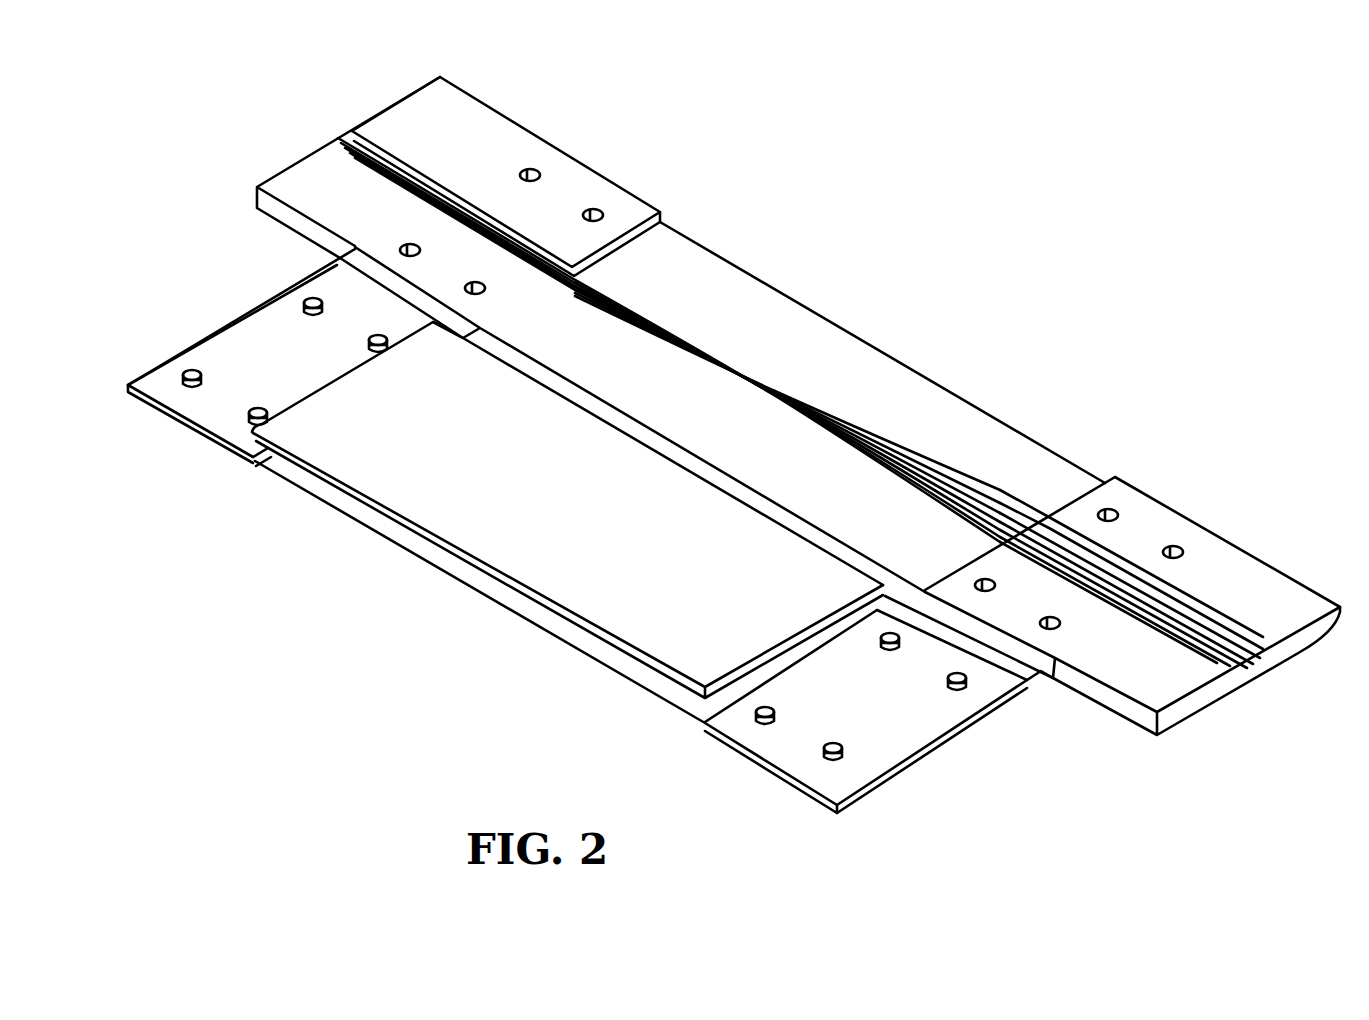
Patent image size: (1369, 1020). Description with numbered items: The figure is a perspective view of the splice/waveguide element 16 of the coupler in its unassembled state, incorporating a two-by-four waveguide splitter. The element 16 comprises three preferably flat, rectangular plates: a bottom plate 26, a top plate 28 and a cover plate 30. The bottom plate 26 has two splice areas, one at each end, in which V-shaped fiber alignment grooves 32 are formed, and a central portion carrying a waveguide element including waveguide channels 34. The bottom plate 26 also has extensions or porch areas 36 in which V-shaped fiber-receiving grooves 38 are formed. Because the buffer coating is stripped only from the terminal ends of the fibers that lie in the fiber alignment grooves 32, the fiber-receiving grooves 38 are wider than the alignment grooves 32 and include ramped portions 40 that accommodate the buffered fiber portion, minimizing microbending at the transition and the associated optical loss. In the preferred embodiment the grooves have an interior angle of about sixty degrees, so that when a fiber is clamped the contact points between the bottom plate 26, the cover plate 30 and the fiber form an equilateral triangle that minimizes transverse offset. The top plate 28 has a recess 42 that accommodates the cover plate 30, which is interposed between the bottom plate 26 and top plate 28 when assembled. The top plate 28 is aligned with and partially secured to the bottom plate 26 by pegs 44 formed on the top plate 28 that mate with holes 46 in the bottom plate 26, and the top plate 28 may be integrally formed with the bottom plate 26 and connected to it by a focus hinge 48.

The splice/waveguide element 16 is at (1003, 190).
The bottom plate 26 is at (488, 112).
The top plate 28 is at (241, 322).
The cover plate 30 is at (590, 530).
The fiber alignment grooves 32 is at (540, 240).
The waveguide channels 34 is at (598, 285).
The porch areas 36 is at (290, 175).
The fiber-receiving grooves 38 is at (368, 155).
The ramped portions 40 is at (338, 138).
The recess 42 is at (283, 470).
The pegs 44 is at (830, 756).
The holes 46 is at (1172, 550).
The focus hinge 48 is at (1037, 682).